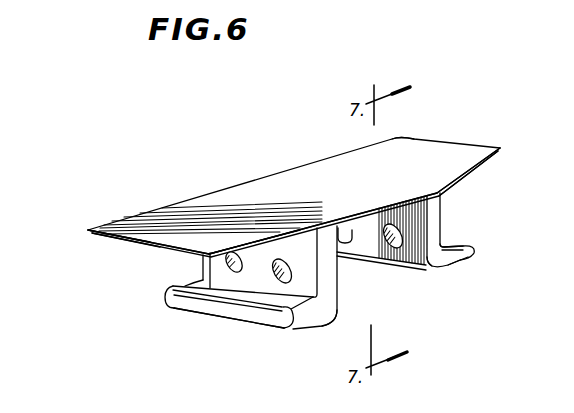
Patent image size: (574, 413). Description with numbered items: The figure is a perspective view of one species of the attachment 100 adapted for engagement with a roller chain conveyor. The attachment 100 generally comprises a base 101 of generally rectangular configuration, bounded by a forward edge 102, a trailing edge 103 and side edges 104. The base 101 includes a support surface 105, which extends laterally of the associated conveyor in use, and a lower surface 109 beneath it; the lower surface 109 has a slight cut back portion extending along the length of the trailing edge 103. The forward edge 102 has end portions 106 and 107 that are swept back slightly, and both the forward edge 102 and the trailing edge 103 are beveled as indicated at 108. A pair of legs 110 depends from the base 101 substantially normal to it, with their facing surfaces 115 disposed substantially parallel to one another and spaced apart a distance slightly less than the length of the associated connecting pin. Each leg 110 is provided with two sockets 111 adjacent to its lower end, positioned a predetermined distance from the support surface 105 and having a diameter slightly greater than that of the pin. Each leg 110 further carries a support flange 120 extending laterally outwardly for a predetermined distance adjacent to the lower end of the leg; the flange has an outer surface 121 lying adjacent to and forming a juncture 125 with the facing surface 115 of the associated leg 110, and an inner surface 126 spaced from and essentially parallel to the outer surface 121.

The attachment 100 is at (197, 185).
The base 101 is at (412, 140).
The forward edge 102 is at (393, 203).
The trailing edge 103 is at (283, 166).
The side edges 104 is at (483, 142).
The support surface 105 is at (367, 174).
The end portion 106 is at (463, 170).
The end portion 107 is at (297, 232).
The bevel 108 is at (492, 156).
The lower surface 109 is at (481, 168).
The leg 110 is at (441, 215).
The socket 111 is at (276, 261).
The facing surface 115 is at (340, 264).
The support flange 120 is at (227, 308).
The outer surface 121 is at (273, 330).
The juncture 125 is at (327, 305).
The inner surface 126 is at (198, 277).